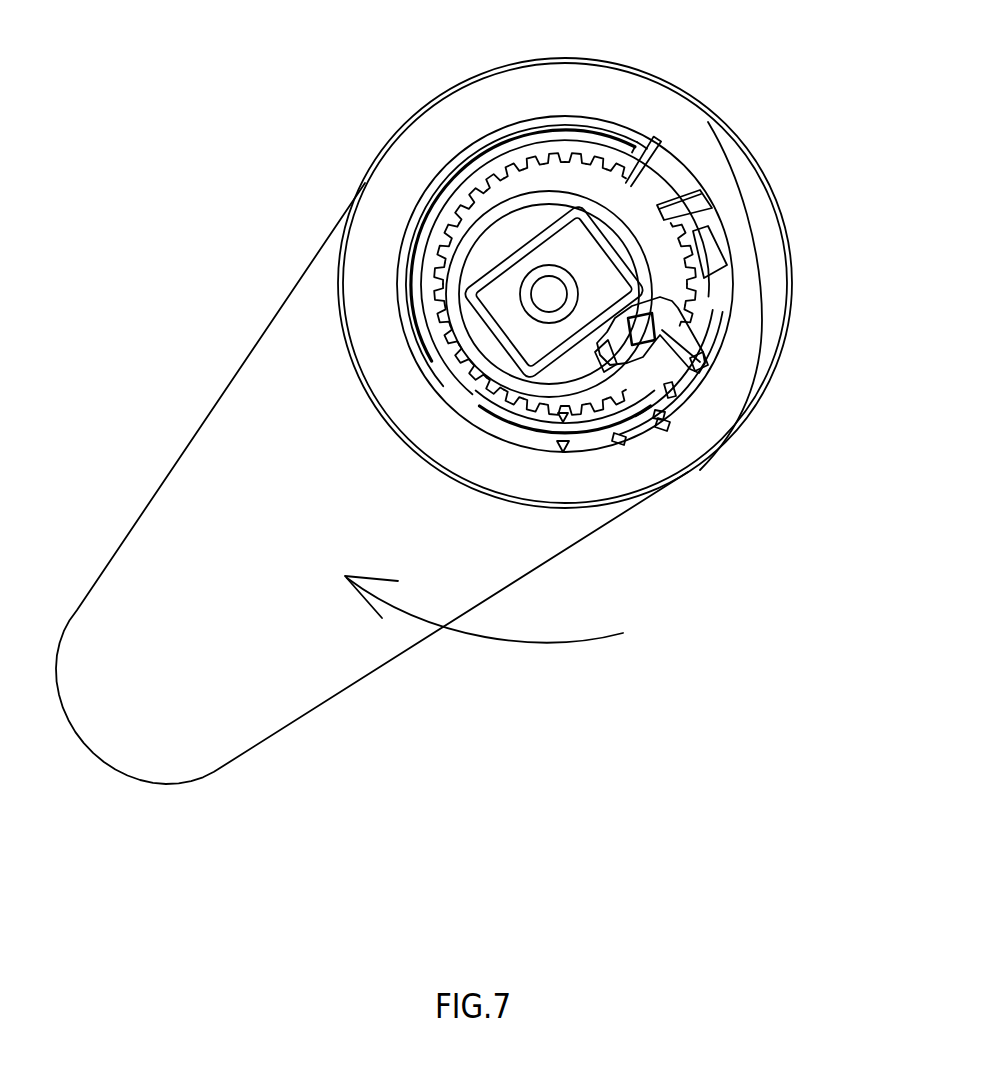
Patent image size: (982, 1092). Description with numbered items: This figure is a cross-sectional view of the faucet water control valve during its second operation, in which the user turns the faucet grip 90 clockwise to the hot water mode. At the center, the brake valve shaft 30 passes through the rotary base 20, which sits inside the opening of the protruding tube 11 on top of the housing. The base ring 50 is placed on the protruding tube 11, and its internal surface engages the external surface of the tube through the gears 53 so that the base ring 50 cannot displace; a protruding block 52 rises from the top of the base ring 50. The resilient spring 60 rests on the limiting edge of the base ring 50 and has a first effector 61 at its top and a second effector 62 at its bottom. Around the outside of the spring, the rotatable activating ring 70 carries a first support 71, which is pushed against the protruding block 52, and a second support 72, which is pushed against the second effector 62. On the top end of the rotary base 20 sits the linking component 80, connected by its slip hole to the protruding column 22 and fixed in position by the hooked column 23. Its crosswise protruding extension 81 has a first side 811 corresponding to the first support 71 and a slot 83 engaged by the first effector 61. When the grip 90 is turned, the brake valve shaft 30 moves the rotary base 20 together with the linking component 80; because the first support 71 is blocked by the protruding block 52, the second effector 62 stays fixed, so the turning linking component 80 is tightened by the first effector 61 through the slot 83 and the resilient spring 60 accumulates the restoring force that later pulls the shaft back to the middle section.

The protruding tube 11 is at (467, 236).
The rotary base 20 is at (510, 232).
The protruding column 22 is at (720, 318).
The hooked column 23 is at (572, 420).
The brake valve shaft 30 is at (478, 270).
The base ring 50 is at (535, 147).
The protruding block 52 is at (718, 232).
The gears 53 is at (512, 133).
The resilient spring 60 is at (652, 418).
The first effector 61 is at (705, 330).
The second effector 62 is at (665, 387).
The activating ring 70 is at (590, 140).
The first support 71 is at (665, 175).
The second support 72 is at (660, 417).
The linking component 80 is at (652, 310).
The crosswise protruding extension 81 is at (690, 333).
The slot 83 is at (690, 365).
The first side 811 is at (723, 332).
The faucet grip 90 is at (375, 672).